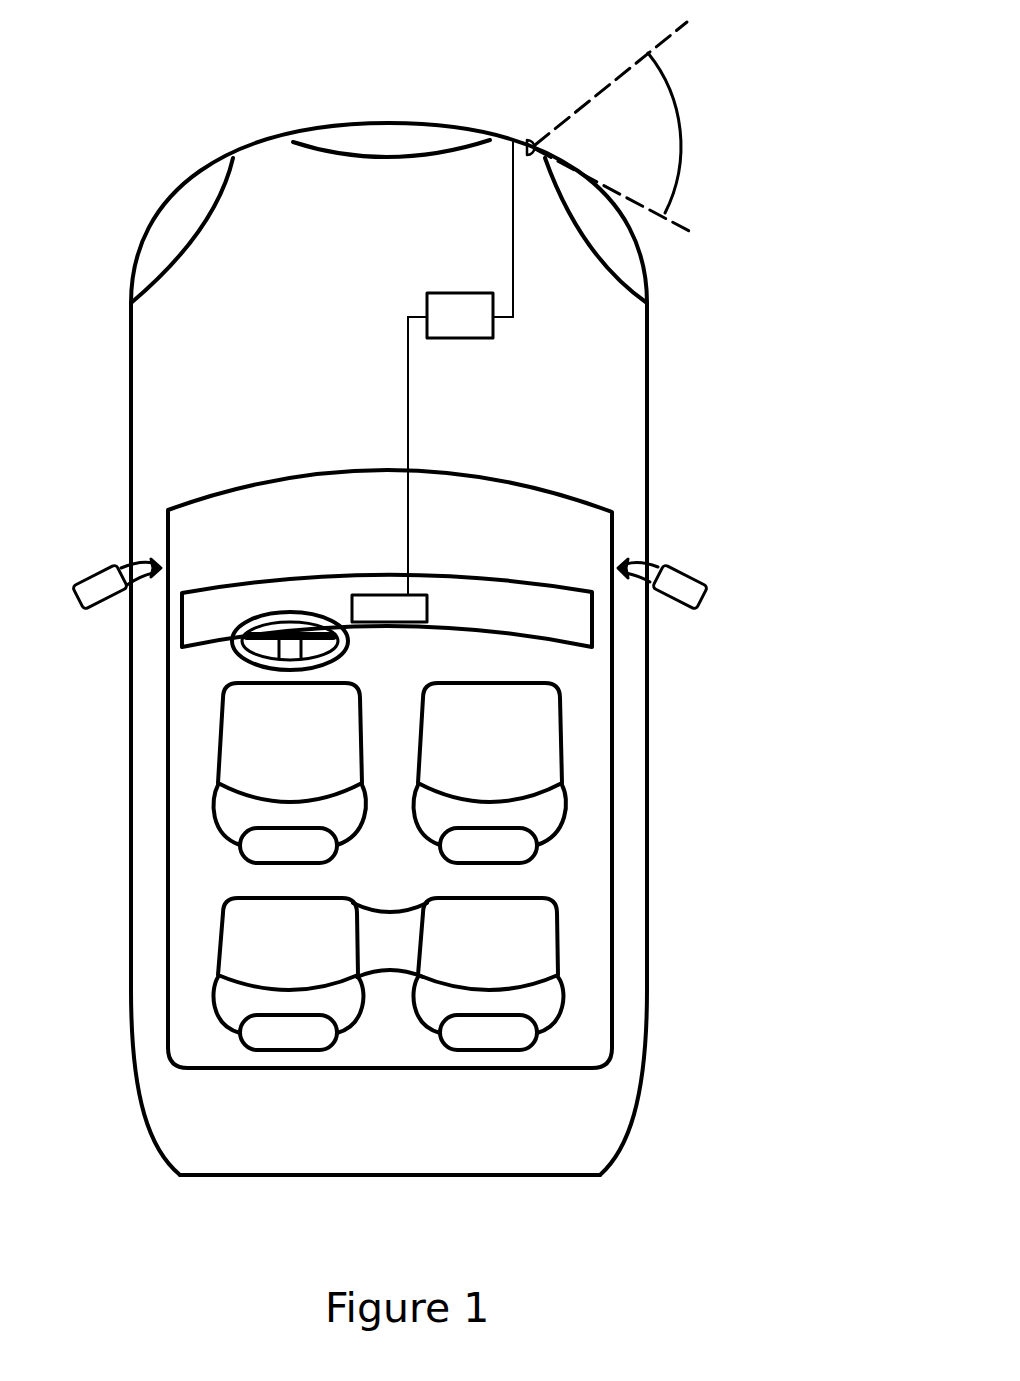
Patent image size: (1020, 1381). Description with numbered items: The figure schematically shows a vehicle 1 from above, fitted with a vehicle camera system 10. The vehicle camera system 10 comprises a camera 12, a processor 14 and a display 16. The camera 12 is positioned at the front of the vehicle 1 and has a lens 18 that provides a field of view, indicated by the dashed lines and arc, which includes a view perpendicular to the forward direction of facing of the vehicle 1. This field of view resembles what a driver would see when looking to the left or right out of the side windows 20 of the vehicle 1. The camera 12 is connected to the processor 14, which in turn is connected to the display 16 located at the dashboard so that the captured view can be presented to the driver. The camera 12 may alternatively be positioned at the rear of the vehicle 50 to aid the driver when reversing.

The vehicle 1 is at (706, 378).
The vehicle camera system 10 is at (546, 312).
The camera 12 is at (521, 138).
The processor 14 is at (463, 328).
The display 16 is at (413, 608).
The lens 18 is at (537, 146).
The side windows 20 is at (612, 712).
The rear of the vehicle 50 is at (540, 1175).